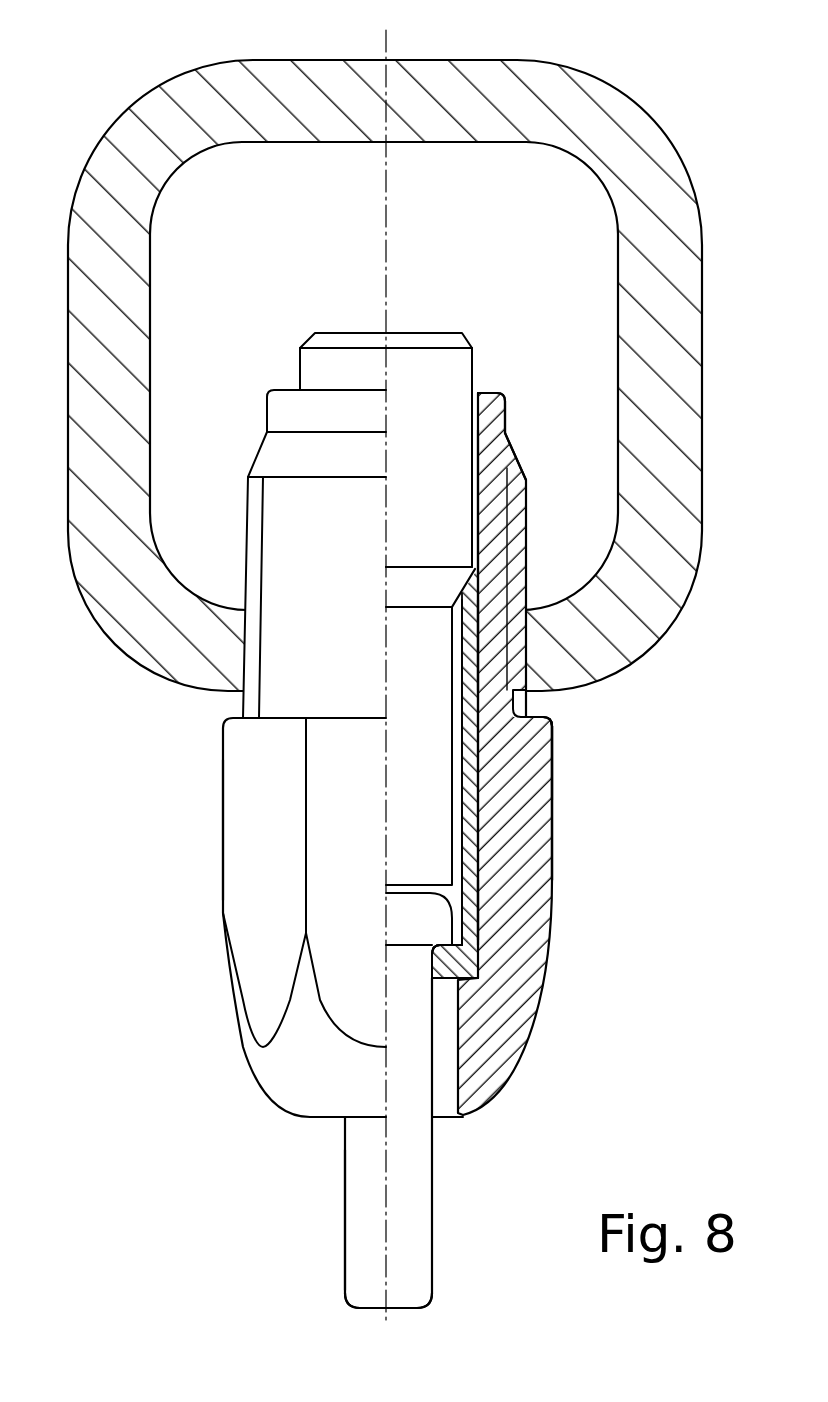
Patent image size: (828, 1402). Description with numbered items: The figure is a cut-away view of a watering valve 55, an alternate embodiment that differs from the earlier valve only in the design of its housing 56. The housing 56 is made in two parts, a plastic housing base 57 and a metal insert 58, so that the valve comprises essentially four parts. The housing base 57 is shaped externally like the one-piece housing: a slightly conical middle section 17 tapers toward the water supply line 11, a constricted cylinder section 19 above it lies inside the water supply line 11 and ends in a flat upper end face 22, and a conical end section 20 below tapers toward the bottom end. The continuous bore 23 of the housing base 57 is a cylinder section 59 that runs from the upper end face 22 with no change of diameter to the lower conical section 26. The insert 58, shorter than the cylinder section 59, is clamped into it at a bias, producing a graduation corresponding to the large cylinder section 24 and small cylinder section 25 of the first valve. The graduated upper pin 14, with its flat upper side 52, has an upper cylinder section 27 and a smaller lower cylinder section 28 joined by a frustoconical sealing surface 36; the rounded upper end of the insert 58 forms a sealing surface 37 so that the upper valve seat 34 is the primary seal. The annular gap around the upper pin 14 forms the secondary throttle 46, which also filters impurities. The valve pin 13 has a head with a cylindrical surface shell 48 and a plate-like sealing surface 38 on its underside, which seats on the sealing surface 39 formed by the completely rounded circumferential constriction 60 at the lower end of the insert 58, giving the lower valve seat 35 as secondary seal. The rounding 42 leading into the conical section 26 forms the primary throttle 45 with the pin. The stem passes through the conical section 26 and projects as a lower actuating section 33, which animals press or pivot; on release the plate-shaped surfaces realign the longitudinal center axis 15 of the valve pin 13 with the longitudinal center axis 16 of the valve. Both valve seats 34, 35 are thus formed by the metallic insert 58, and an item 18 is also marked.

The water supply line 11 is at (573, 103).
The longitudinal center axis 16 is at (382, 178).
The flat upper side 52 is at (345, 333).
The upper pin 14 is at (425, 370).
The upper cylinder section 27 is at (457, 383).
The upper end face 22 is at (498, 383).
The cylinder section 19 is at (287, 410).
The lower cylinder section 28 is at (400, 677).
The sealing surface 36 is at (470, 587).
The upper valve seat 34 is at (510, 580).
The secondary throttle 46 is at (487, 468).
The large cylinder section 24 is at (476, 497).
The sealing surface 37 is at (463, 627).
The insert 58 is at (472, 742).
The cylinder section 59 is at (473, 833).
The circumferential constriction 60 is at (430, 978).
The cylindrical surface shell 48 is at (450, 920).
The valve seat 35 is at (398, 969).
The recess 18 is at (533, 698).
The middle section 17 is at (553, 768).
The small cylinder section 25 is at (482, 813).
The continuous bore 23 is at (482, 813).
The housing base 57 is at (530, 820).
The housing 56 is at (583, 864).
The conical section 26 is at (445, 1052).
The sealing surface 38 is at (515, 920).
The sealing surface 39 is at (493, 957).
The rounding 42 is at (493, 957).
The primary throttle 45 is at (447, 994).
The valve pin 13 is at (413, 1078).
The lower actuating section 33 is at (407, 1223).
The longitudinal center axis 15 is at (387, 1282).
The end section 20 is at (290, 1087).
The watering valve 55 is at (172, 778).